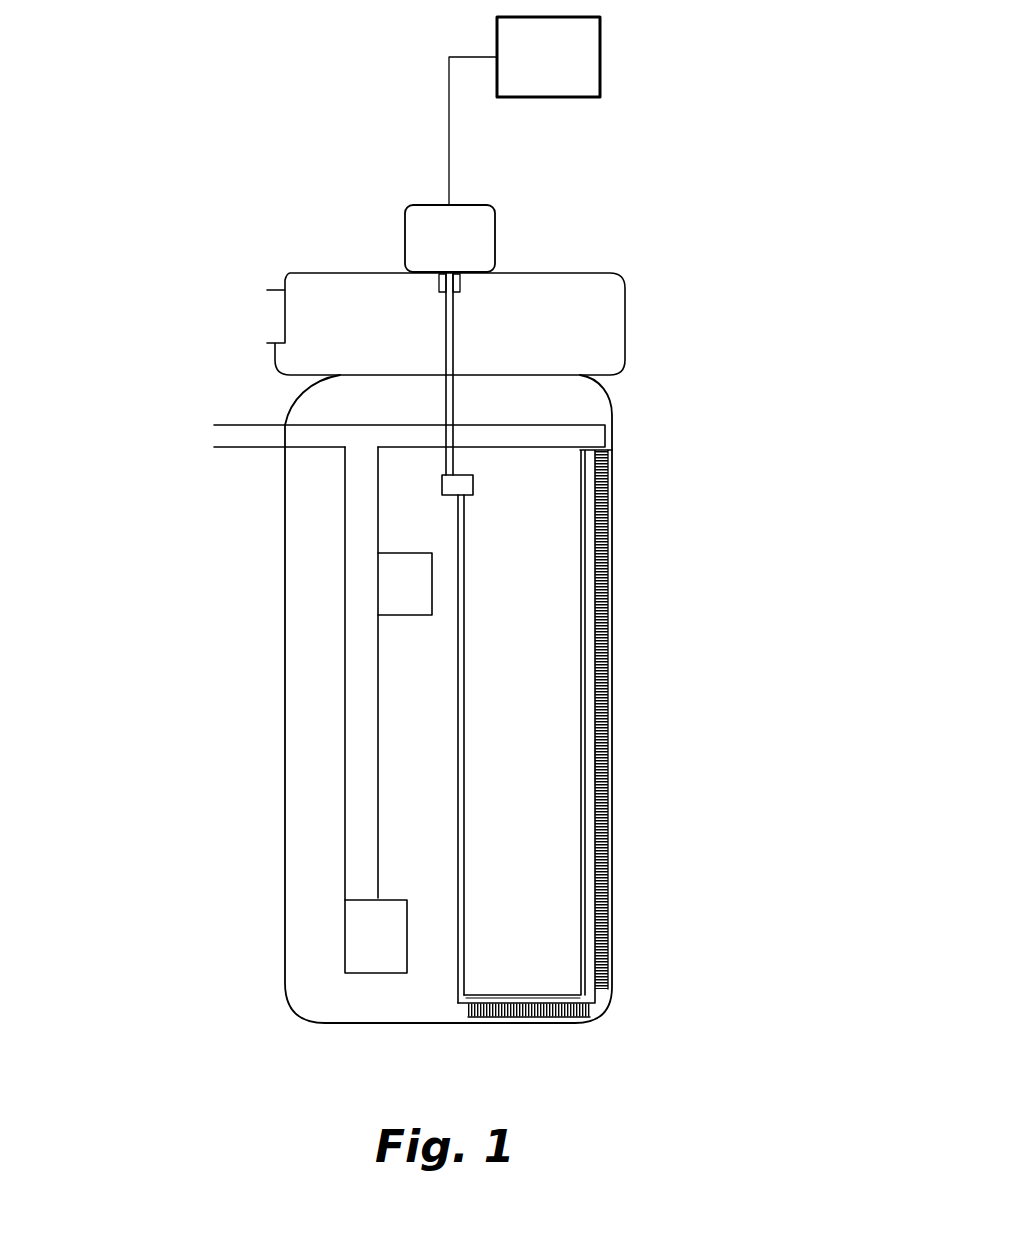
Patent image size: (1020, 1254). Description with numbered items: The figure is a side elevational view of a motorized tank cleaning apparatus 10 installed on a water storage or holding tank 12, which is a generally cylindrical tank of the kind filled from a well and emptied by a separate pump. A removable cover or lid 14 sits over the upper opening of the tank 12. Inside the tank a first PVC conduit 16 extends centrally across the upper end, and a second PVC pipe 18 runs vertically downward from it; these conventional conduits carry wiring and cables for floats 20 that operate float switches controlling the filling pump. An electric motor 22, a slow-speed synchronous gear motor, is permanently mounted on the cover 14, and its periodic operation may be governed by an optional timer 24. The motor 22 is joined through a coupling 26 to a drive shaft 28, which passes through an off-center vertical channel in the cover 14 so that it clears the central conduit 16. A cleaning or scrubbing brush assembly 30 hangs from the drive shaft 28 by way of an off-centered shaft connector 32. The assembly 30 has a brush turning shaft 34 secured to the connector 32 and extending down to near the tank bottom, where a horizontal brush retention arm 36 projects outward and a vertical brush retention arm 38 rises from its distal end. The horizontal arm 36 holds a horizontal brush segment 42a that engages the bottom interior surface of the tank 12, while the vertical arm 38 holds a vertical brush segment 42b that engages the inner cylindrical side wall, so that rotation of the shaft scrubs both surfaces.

The motorized tank cleaning apparatus 10 is at (150, 270).
The water storage or holding tank 12 is at (608, 396).
The cover or lid 14 is at (270, 280).
The first PVC conduit 16 is at (240, 424).
The second PVC pipe 18 is at (358, 508).
The floats 20 is at (412, 596).
The electric motor 22 is at (495, 243).
The timer 24 is at (600, 52).
The coupling 26 is at (460, 284).
The drive shaft 28 is at (455, 352).
The cleaning or scrubbing brush assembly 30 is at (608, 893).
The off-centered shaft connector 32 is at (473, 482).
The brush turning shaft 34 is at (466, 648).
The horizontal brush retention arm 36 is at (540, 993).
The vertical brush retention arm 38 is at (605, 757).
The horizontal brush segment 42a is at (530, 1008).
The vertical brush segment 42b is at (608, 690).